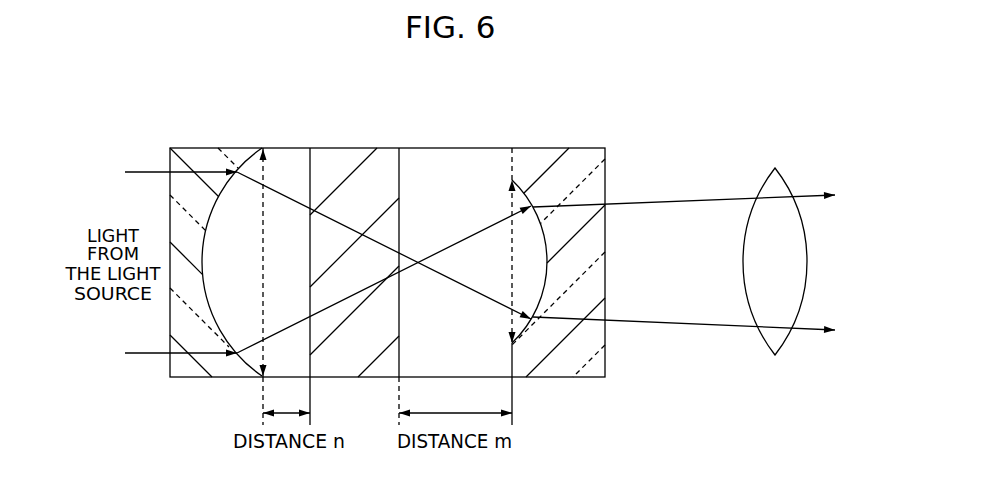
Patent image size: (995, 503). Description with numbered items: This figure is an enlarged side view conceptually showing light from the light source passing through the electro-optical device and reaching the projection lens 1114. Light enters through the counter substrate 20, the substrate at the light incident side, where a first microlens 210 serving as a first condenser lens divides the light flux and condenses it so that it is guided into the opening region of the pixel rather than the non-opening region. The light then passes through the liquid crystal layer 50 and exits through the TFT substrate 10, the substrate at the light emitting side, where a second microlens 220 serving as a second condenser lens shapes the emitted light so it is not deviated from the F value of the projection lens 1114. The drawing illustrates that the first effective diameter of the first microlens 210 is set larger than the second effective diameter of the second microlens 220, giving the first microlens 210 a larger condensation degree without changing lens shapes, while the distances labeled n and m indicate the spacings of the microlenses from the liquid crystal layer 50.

The counter substrate 20 is at (197, 153).
The first microlens 210 is at (240, 165).
The liquid crystal layer 50 is at (358, 152).
The second microlens 220 is at (511, 201).
The TFT substrate 10 is at (578, 150).
The projection lens 1114 is at (757, 220).